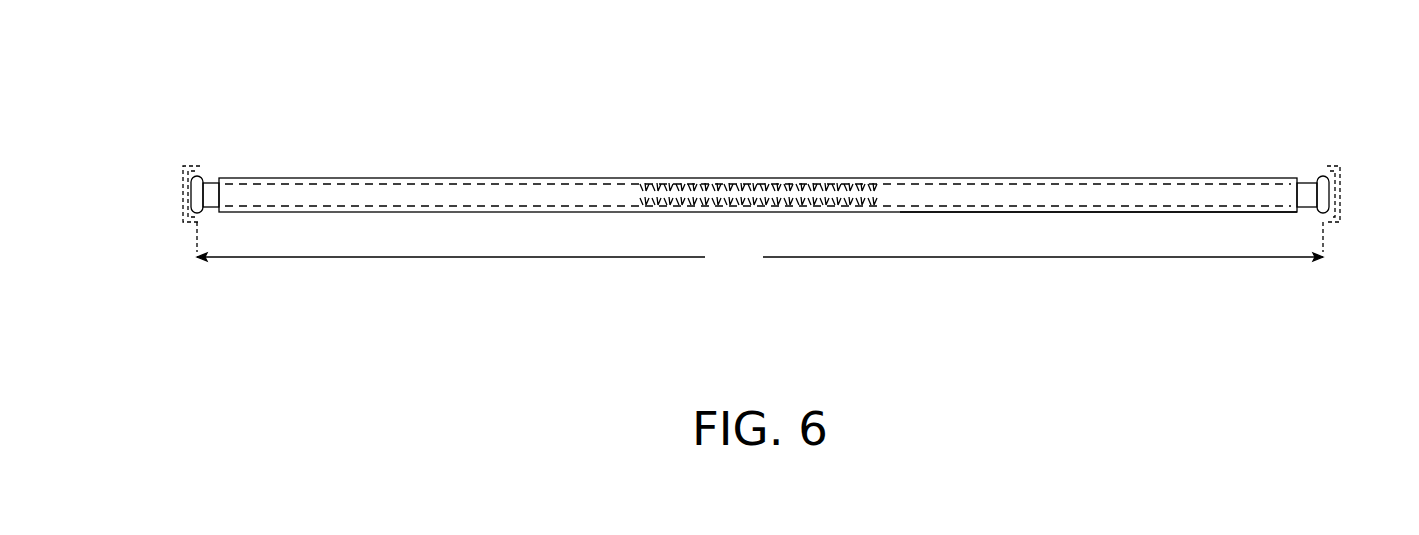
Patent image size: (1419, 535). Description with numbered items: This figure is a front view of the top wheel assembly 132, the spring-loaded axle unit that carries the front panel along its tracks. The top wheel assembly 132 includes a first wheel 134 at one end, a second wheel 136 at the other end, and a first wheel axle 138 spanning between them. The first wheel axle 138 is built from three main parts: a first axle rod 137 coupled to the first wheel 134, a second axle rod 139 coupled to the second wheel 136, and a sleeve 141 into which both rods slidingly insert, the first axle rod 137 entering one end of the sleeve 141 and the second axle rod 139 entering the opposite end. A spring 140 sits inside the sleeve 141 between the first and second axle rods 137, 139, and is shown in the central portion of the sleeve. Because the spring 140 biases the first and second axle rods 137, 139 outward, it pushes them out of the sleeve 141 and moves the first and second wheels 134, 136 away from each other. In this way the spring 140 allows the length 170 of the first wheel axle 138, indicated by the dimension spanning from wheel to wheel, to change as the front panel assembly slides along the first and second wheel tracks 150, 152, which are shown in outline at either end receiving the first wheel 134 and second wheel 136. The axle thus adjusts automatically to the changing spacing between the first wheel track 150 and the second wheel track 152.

The top wheel assembly 132 is at (497, 63).
The first wheel 134 is at (193, 178).
The second wheel 136 is at (1321, 178).
The first axle rod 137 is at (213, 190).
The first wheel axle 138 is at (1128, 218).
The second axle rod 139 is at (1306, 205).
The spring 140 is at (770, 188).
The sleeve 141 is at (356, 178).
The first wheel track 150 is at (186, 207).
The second wheel track 152 is at (1337, 195).
The length 170 is at (760, 246).